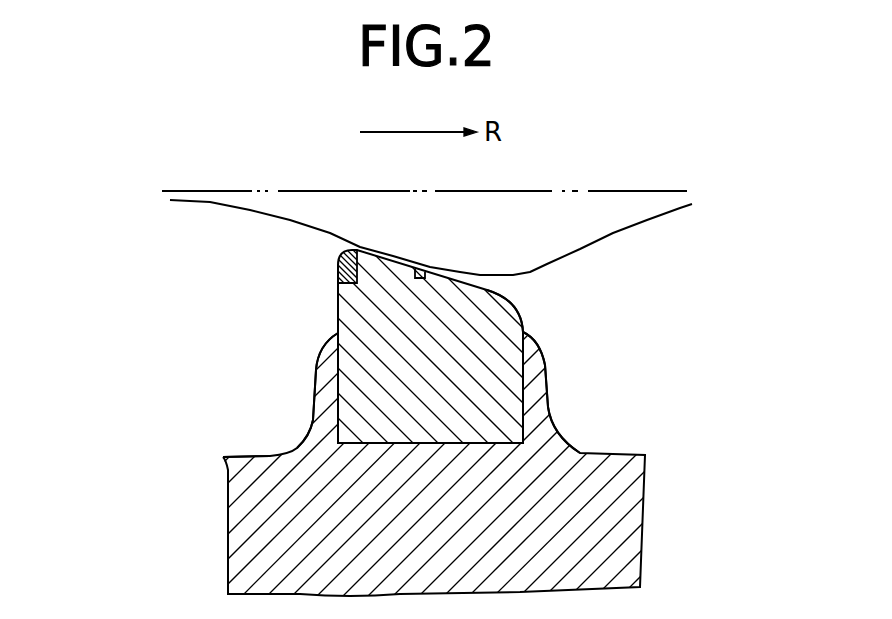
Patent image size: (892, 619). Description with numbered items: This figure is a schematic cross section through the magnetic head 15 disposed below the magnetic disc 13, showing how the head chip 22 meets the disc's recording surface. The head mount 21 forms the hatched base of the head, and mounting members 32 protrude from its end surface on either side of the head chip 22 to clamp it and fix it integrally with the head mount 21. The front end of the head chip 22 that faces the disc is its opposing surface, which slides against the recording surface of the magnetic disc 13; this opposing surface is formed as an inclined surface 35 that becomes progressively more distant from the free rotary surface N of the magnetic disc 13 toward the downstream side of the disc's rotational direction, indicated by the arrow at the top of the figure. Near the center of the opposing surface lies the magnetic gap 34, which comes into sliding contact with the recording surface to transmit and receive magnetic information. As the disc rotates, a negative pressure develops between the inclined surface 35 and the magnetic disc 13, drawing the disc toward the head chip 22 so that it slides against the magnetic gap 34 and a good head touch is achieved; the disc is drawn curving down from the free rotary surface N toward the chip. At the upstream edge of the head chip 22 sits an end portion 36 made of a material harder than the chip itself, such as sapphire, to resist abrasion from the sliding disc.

The magnetic disc 13 is at (658, 220).
The magnetic head 15 is at (223, 482).
The head mount 21 is at (630, 525).
The head chip 22 is at (507, 352).
The mounting members 32 is at (538, 410).
The magnetic gap 34 is at (413, 278).
The inclined surface 35 is at (510, 288).
The end portion 36 is at (338, 272).
The free rotary surface N is at (643, 190).